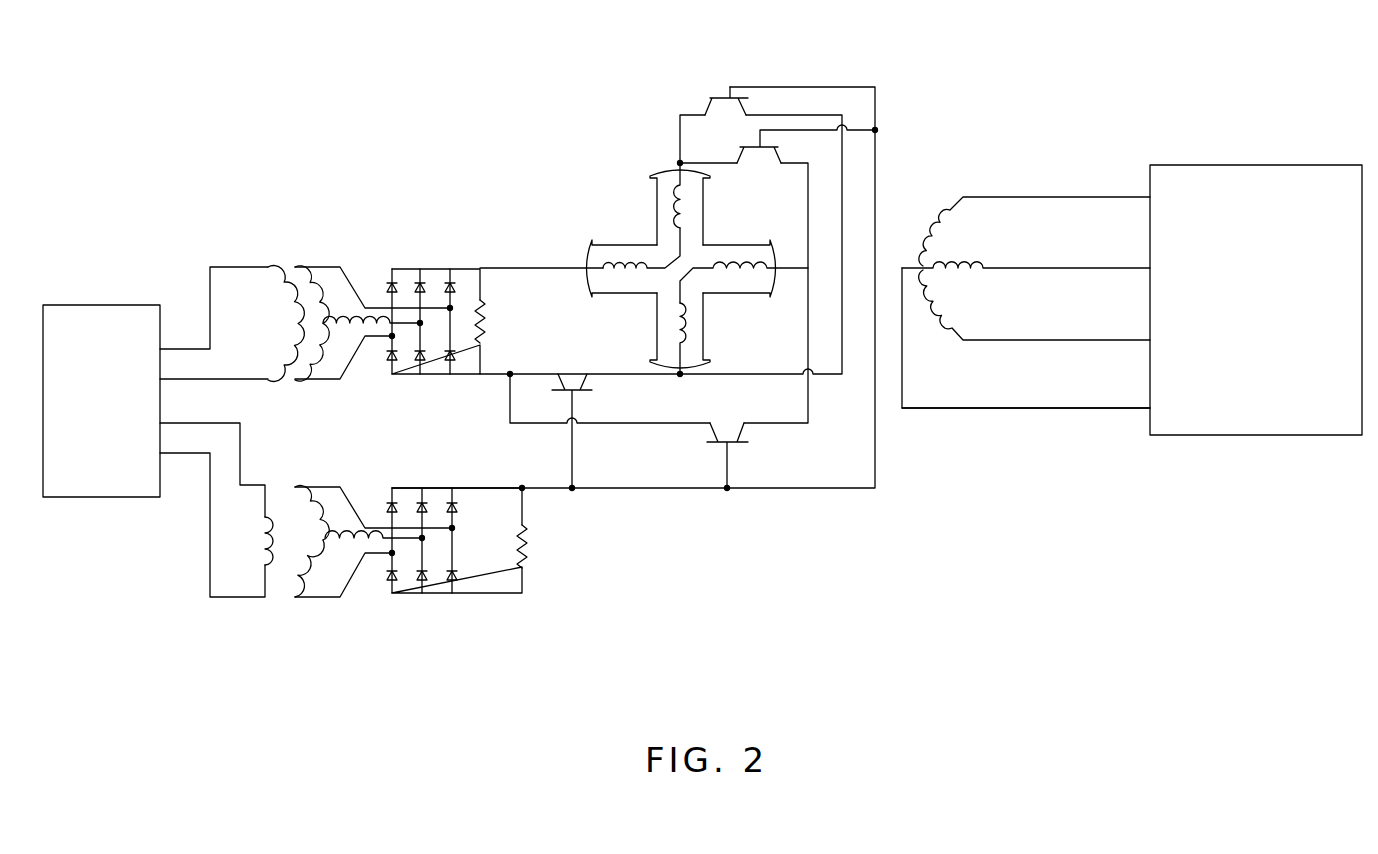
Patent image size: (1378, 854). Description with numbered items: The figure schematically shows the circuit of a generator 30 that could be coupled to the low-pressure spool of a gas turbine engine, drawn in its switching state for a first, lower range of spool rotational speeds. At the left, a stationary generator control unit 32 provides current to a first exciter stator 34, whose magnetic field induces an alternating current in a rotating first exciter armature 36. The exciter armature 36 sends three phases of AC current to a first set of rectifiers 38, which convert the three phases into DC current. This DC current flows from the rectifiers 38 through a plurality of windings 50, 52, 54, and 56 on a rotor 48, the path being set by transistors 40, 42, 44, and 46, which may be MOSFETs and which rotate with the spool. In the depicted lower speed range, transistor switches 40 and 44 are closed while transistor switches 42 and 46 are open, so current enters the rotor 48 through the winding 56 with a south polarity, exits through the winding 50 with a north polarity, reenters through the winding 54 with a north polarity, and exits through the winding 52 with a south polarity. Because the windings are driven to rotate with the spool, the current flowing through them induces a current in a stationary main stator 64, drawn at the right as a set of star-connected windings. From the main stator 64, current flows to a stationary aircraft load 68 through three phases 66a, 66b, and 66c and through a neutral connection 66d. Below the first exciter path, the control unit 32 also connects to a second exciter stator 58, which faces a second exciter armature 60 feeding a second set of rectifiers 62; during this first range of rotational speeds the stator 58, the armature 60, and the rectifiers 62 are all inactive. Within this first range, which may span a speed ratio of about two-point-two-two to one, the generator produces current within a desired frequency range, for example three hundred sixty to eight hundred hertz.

The generator 30 is at (178, 122).
The generator control unit 32 is at (114, 408).
The first exciter stator 34 is at (276, 309).
The first exciter armature 36 is at (326, 285).
The first set of rectifiers 38 is at (433, 258).
The transistor switch 40 is at (728, 116).
The transistor switch 42 is at (760, 165).
The transistor switch 44 is at (727, 428).
The transistor switch 46 is at (572, 373).
The rotor 48 is at (675, 268).
The winding 50 is at (685, 212).
The winding 52 is at (728, 272).
The winding 54 is at (677, 317).
The winding 56 is at (628, 270).
The second exciter stator 58 is at (252, 531).
The second exciter armature 60 is at (331, 496).
The second set of rectifiers 62 is at (433, 482).
The main stator 64 is at (1026, 256).
The phase 66a is at (1117, 197).
The phase 66b is at (1117, 268).
The phase 66c is at (1117, 340).
The neutral connection 66d is at (1115, 408).
The load 68 is at (1280, 308).